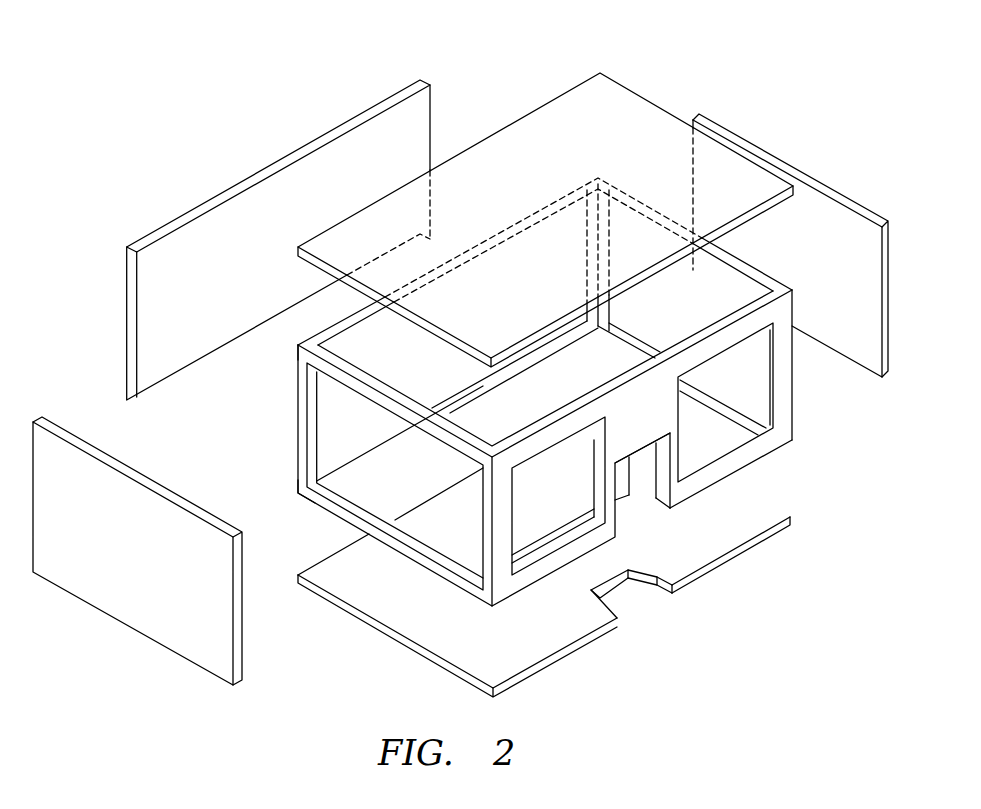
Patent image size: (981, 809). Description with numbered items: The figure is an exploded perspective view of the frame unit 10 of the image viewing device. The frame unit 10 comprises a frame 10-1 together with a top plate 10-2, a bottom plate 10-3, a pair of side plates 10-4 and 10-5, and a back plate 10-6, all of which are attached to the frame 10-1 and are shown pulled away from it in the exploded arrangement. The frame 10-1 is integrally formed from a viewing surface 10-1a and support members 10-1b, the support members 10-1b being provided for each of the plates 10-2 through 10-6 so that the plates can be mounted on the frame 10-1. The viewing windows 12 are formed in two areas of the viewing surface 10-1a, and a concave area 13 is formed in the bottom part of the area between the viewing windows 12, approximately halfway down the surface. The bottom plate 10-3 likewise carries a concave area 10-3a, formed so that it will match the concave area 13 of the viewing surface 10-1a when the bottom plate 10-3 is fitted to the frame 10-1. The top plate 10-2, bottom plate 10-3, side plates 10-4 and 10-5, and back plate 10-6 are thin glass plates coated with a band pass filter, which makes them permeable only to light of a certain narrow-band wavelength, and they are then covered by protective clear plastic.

The frame unit 10 is at (782, 70).
The frame 10-1 is at (795, 403).
The viewing surface 10-1a is at (767, 455).
The support members 10-1b is at (312, 332).
The top plate 10-2 is at (547, 105).
The bottom plate 10-3 is at (400, 634).
The concave area 10-3a is at (643, 588).
The side plate 10-4 is at (132, 630).
The side plate 10-5 is at (823, 154).
The back plate 10-6 is at (273, 163).
The viewing windows 12 is at (535, 548).
The concave area 13 is at (642, 497).